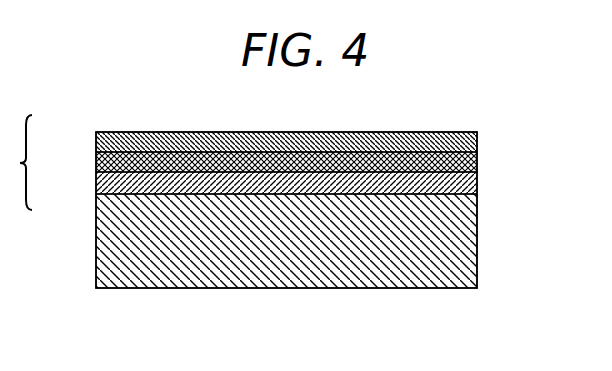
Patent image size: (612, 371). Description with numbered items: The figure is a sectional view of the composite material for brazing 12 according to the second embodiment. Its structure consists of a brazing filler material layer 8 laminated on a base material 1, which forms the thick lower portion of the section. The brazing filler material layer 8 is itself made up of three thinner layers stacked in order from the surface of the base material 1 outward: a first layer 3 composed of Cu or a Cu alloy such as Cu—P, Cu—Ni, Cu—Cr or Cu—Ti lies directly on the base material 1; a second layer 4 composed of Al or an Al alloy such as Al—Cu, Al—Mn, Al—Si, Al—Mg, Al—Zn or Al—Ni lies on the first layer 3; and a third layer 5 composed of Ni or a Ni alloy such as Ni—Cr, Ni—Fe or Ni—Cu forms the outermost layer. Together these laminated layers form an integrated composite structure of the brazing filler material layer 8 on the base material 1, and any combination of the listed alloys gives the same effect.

The base material 1 is at (100, 243).
The first layer 3 is at (100, 186).
The second layer 4 is at (100, 162).
The third layer 5 is at (100, 140).
The brazing filler material layer 8 is at (17, 162).
The composite material for brazing 12 is at (452, 120).